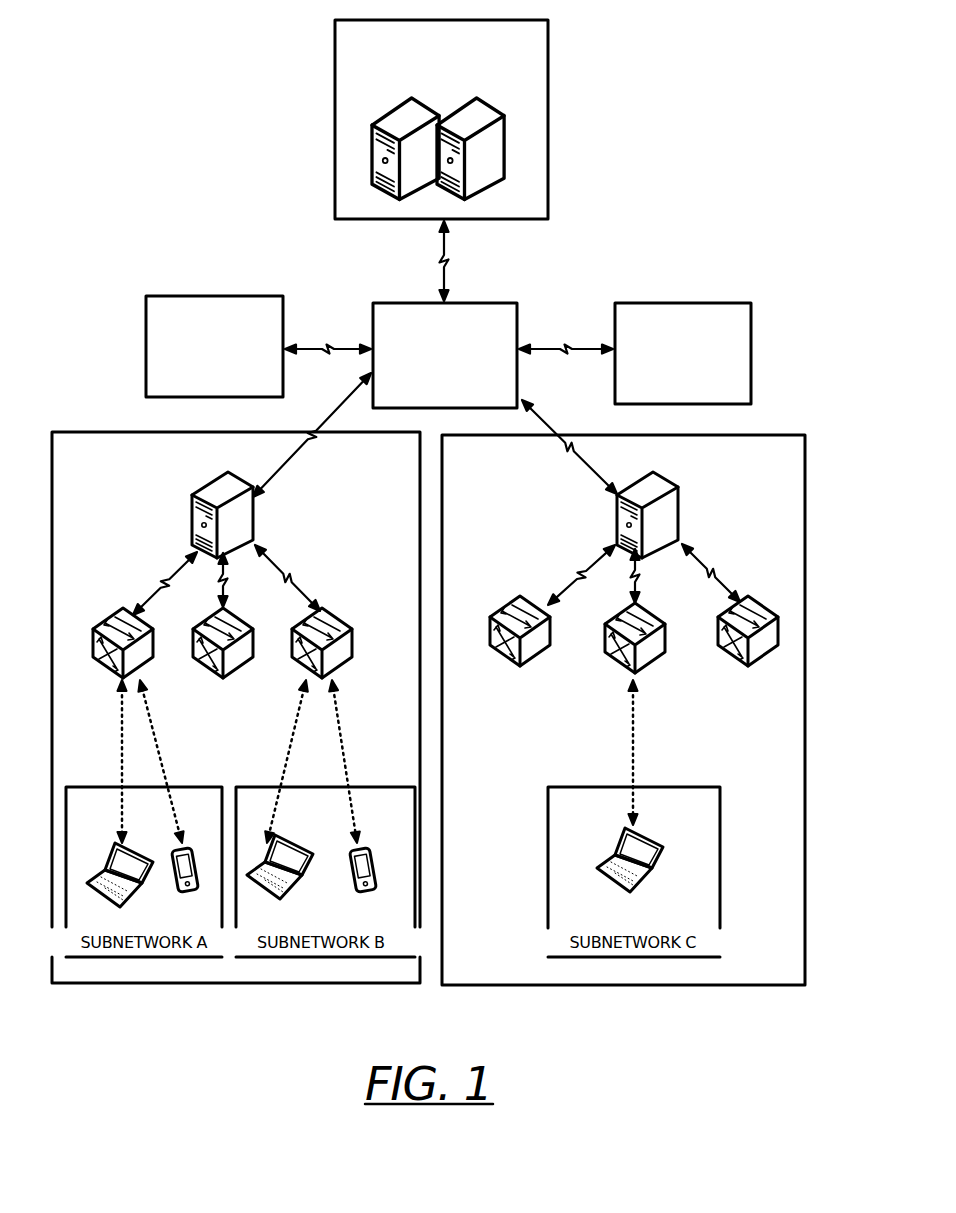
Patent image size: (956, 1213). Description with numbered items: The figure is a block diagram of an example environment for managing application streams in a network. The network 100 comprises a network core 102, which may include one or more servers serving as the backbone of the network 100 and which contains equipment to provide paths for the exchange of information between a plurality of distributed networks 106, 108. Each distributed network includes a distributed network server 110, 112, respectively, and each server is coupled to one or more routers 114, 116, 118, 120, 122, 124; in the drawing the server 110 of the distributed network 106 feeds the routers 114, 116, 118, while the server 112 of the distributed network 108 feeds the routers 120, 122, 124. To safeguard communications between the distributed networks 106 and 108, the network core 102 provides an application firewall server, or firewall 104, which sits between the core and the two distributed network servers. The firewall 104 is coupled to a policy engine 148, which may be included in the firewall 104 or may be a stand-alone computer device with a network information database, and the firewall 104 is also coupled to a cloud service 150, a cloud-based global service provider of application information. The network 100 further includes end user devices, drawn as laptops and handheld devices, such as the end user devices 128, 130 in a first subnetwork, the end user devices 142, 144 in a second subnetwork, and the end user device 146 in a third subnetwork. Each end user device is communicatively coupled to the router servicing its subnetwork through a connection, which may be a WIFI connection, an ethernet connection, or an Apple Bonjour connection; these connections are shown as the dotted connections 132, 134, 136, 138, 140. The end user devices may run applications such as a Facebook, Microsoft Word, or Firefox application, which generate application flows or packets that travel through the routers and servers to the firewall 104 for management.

The network 100 is at (677, 92).
The network core 102 is at (441, 119).
The application firewall server 104 is at (445, 355).
The distributed network 106 is at (52, 432).
The distributed network 108 is at (757, 435).
The distributed network server 110 is at (254, 524).
The distributed network server 112 is at (680, 490).
The router 114 is at (135, 623).
The router 116 is at (233, 618).
The router 118 is at (333, 627).
The router 120 is at (553, 627).
The router 122 is at (650, 627).
The router 124 is at (778, 637).
The end user device 128 is at (180, 897).
The end user device 130 is at (118, 903).
The connection 132 is at (110, 761).
The connection 134 is at (155, 761).
The connection 136 is at (283, 761).
The connection 138 is at (337, 761).
The connection 140 is at (622, 752).
The end user device 142 is at (290, 899).
The end user device 144 is at (367, 897).
The end user device 146 is at (640, 841).
The policy engine 148 is at (683, 353).
The cloud service 150 is at (214, 346).